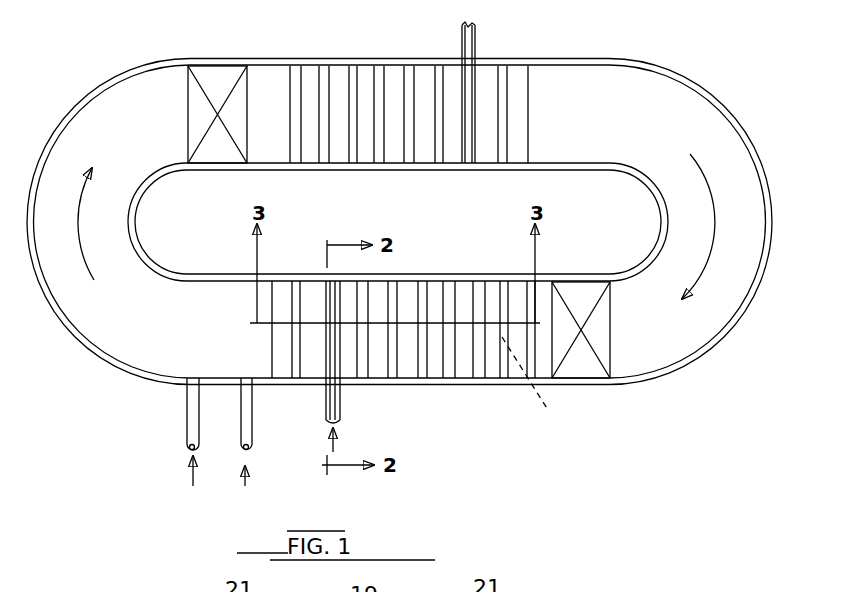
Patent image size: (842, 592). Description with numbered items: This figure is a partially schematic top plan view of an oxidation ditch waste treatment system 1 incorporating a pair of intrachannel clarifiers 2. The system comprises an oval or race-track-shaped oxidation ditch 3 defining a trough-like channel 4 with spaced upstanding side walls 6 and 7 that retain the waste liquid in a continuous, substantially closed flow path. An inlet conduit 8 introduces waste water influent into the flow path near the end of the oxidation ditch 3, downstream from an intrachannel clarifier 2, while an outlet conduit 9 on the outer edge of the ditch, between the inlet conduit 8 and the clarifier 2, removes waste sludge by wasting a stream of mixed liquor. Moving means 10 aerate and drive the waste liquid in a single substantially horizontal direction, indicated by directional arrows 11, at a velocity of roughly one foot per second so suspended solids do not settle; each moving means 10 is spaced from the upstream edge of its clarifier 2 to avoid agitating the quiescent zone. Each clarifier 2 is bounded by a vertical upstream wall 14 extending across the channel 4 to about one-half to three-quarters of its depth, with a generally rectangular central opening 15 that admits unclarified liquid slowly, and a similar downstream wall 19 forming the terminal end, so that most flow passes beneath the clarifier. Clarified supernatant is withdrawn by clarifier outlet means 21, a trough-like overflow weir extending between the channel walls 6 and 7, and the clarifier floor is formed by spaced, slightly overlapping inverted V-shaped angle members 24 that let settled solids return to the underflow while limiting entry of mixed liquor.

The oxidation ditch waste treatment system 1 is at (709, 72).
The intrachannel clarifier 2 is at (383, 66).
The oxidation ditch 3 is at (763, 275).
The channel 4 is at (646, 133).
The side wall 6 is at (421, 274).
The side wall 7 is at (450, 387).
The inlet conduit 8 is at (199, 432).
The outlet conduit 9 is at (248, 417).
The moving means 10 is at (210, 75).
The directional arrows 11 is at (713, 196).
The upstream wall 14 is at (502, 370).
The central opening 15 is at (539, 385).
The downstream wall 19 is at (295, 372).
The clarifier outlet means 21 is at (473, 33).
The angle member 24 is at (323, 80).